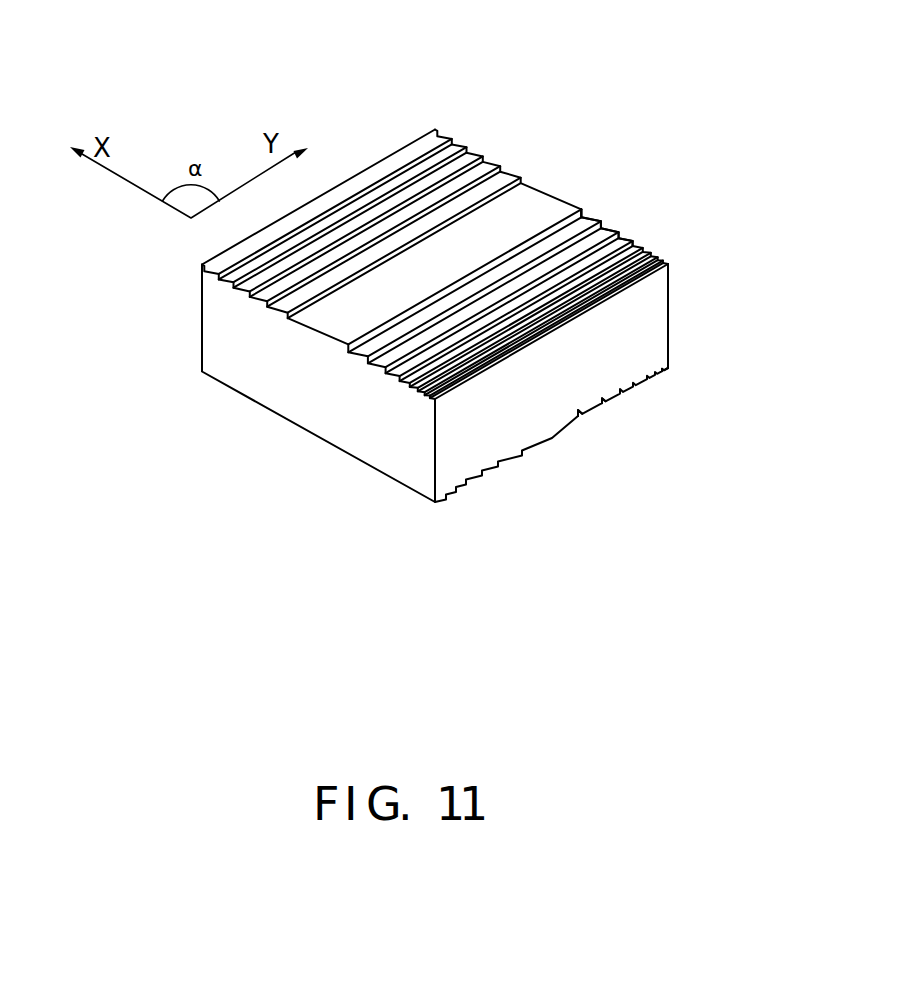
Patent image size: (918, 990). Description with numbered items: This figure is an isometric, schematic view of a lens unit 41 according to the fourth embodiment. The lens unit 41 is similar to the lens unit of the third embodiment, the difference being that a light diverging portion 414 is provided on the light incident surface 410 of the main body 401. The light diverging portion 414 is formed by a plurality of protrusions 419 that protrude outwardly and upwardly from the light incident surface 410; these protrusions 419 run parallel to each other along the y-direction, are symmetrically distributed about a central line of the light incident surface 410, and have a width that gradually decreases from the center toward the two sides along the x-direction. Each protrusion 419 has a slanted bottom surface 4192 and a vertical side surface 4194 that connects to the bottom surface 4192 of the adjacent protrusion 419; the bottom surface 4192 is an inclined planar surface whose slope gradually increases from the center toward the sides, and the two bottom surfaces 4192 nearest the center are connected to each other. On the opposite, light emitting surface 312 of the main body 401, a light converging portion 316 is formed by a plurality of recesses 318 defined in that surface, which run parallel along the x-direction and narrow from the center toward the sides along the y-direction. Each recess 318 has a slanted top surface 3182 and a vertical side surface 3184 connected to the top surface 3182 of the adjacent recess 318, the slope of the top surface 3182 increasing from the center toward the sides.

The lens unit 41 is at (363, 66).
The light incident surface 410 is at (526, 193).
The light diverging portion 414 is at (310, 318).
The bottom surface 4192 is at (581, 226).
The side surface 4194 is at (596, 226).
The protrusions 419 is at (717, 61).
The main body 401 is at (668, 302).
The light emitting surface 312 is at (668, 369).
The light converging portion 316 is at (535, 444).
The recesses 318 is at (735, 398).
The side surface 3184 is at (603, 405).
The top surface 3182 is at (585, 418).